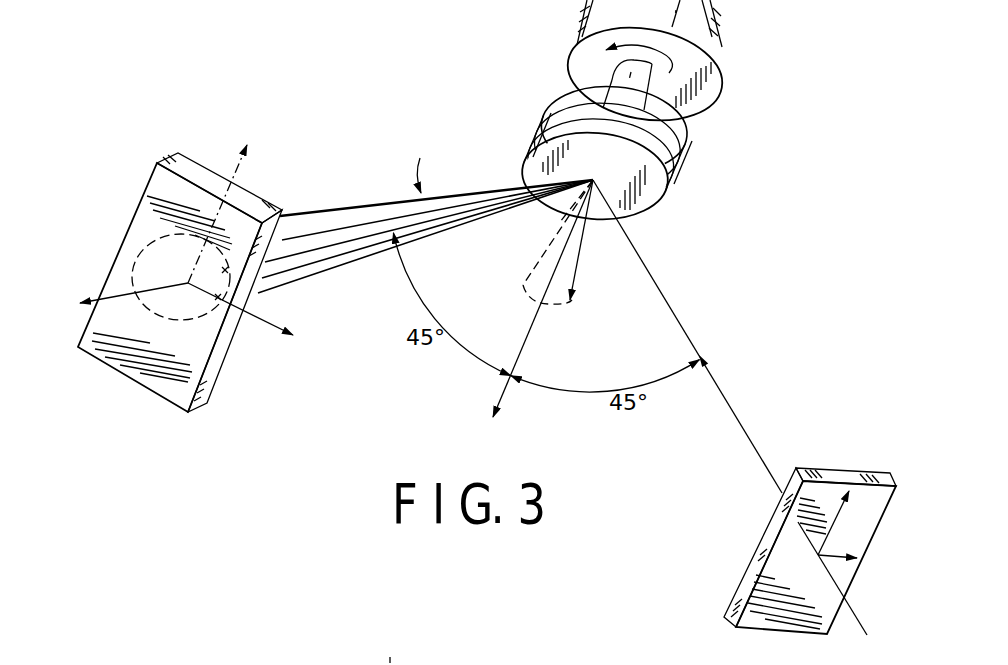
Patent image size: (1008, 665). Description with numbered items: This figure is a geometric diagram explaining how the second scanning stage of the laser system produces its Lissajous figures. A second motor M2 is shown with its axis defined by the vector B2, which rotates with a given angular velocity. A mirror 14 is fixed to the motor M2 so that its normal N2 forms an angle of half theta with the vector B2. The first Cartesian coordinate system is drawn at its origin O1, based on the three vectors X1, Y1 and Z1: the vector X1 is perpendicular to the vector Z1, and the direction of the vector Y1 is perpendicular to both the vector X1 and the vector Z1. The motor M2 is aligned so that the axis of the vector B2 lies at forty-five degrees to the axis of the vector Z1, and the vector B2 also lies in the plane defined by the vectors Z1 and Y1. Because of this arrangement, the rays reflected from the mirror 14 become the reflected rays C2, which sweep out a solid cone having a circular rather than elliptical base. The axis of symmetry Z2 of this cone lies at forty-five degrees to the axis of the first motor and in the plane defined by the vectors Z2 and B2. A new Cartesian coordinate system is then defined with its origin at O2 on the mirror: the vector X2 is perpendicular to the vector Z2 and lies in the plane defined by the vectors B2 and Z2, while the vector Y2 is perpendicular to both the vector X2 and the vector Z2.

The mirror 14 is at (672, 167).
The second motor M2 is at (644, 66).
The reflected rays C2 is at (462, 120).
The mirror normal N2 is at (570, 261).
The motor axis vector B2 is at (563, 415).
The vector Z1 is at (730, 407).
The vector X1 is at (883, 488).
The vector Y1 is at (898, 562).
The origin of first coordinate system O1 is at (810, 551).
The origin of second coordinate system O2 is at (180, 282).
The vector X2 is at (342, 332).
The vector Y2 is at (270, 107).
The axis of symmetry Z2 is at (73, 287).